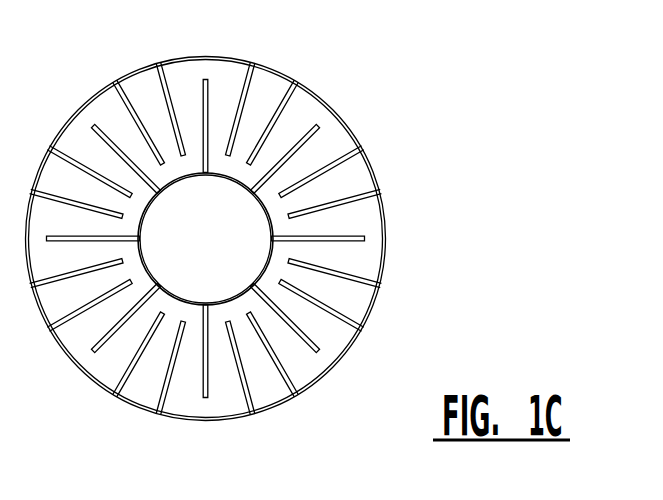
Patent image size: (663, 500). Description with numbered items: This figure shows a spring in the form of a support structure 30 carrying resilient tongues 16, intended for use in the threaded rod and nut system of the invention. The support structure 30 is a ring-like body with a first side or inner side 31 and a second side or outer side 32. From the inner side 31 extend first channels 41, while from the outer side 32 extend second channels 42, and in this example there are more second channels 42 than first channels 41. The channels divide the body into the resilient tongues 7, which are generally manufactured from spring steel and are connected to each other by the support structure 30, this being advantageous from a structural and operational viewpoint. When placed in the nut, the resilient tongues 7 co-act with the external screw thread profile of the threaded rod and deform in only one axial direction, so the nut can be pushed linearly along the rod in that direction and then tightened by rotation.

The resilient tongue 7 is at (235, 78).
The resilient tongue 16 is at (232, 170).
The support structure 30 is at (472, 102).
The inner side 31 is at (272, 231).
The outer side 32 is at (383, 224).
The first channel 41 is at (200, 347).
The second channel 42 is at (275, 357).